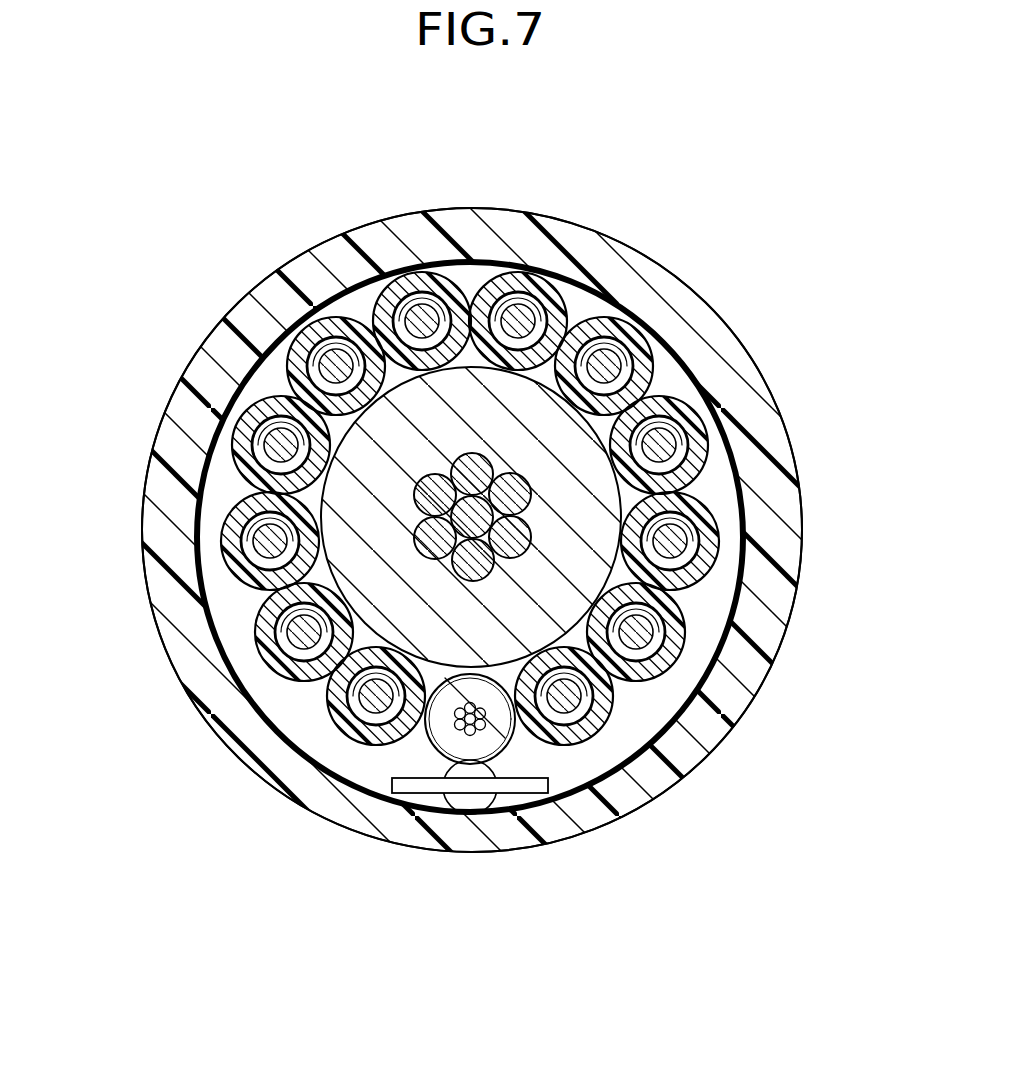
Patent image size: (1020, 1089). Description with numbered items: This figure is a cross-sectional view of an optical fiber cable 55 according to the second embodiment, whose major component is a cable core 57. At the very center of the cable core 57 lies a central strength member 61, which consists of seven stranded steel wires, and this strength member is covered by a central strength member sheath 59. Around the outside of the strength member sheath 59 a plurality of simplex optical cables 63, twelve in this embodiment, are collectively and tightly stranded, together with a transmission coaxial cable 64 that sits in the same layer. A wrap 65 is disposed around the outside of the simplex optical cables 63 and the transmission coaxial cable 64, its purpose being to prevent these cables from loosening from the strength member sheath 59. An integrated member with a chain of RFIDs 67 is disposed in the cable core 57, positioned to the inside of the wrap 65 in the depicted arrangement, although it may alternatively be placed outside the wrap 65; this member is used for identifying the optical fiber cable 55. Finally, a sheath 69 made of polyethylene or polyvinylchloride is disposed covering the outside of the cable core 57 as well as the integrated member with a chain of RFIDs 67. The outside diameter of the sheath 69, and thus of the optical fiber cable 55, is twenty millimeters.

The optical fiber cable 55 is at (720, 176).
The cable core 57 is at (372, 323).
The central strength member sheath 59 is at (598, 482).
The central strength member 61 is at (530, 563).
The simplex optical cable 63 is at (602, 320).
The transmission coaxial cable 64 is at (498, 720).
The wrap 65 is at (350, 788).
The integrated member with a chain of RFIDs 67 is at (408, 812).
The sheath 69 is at (165, 490).